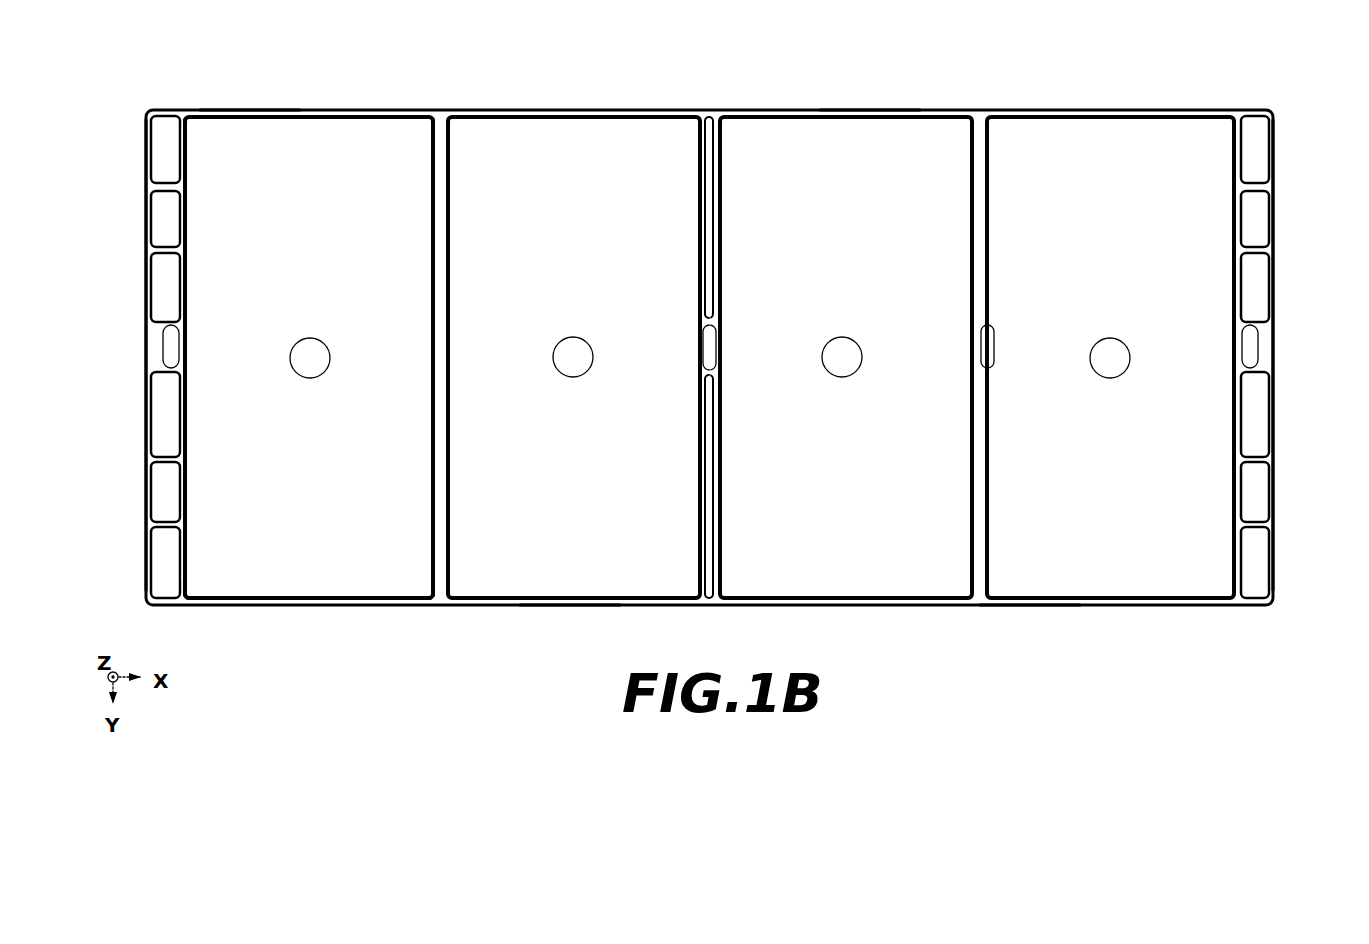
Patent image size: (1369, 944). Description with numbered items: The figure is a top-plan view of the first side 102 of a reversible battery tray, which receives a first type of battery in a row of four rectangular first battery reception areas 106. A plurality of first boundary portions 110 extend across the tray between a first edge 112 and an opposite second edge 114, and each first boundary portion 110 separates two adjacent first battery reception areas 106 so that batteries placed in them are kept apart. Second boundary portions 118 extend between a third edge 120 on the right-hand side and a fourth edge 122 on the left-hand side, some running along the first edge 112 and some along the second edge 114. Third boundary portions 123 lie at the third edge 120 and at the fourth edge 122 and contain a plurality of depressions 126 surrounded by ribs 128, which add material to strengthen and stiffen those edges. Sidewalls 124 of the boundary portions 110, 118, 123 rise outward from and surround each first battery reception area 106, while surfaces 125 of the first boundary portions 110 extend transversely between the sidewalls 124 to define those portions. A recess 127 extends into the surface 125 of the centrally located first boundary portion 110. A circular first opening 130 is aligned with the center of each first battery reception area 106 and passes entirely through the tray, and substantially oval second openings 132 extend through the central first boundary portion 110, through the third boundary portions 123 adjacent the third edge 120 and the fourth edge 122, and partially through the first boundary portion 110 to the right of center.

The first side 102 is at (1165, 140).
The first battery reception areas 106 is at (335, 177).
The first boundary portions 110 is at (440, 480).
The first edge 112 is at (566, 605).
The second edge 114 is at (862, 110).
The second boundary portions 118 is at (240, 110).
The third edge 120 is at (1277, 187).
The fourth edge 122 is at (145, 248).
The third boundary portions 123 is at (182, 405).
The sidewalls 124 is at (430, 527).
The surfaces 125 is at (442, 190).
The depressions 126 is at (165, 432).
The recess 127 is at (712, 255).
The ribs 128 is at (1258, 253).
The first openings 130 is at (314, 362).
The second openings 132 is at (168, 347).